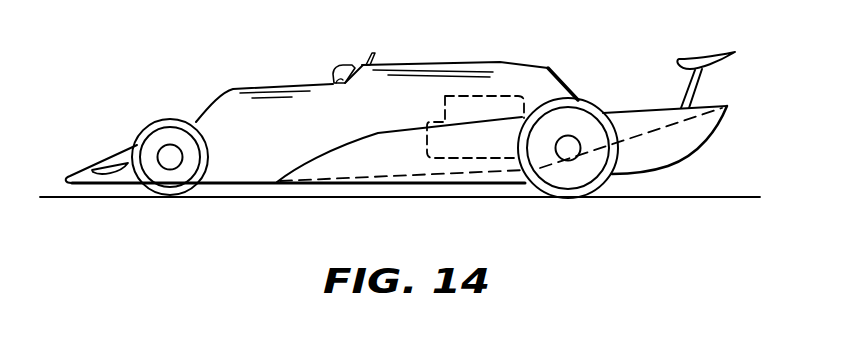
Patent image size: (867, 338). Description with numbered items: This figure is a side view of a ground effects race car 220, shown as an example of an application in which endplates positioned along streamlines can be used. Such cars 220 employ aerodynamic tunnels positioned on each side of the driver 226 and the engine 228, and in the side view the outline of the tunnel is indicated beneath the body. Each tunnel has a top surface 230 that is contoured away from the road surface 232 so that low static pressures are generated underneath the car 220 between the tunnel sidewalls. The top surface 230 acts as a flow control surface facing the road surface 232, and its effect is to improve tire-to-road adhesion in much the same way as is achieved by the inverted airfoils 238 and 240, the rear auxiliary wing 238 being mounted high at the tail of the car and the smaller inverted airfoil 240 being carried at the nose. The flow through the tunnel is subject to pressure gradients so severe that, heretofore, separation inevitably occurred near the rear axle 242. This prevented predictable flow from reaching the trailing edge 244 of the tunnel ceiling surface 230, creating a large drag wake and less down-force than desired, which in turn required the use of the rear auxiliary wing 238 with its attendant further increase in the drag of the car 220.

The ground effects race car 220 is at (413, 73).
The driver 226 is at (335, 65).
The engine 228 is at (497, 96).
The top surface 230 is at (460, 173).
The road surface 232 is at (695, 197).
The inverted airfoil 238 is at (680, 60).
The inverted airfoil 240 is at (105, 172).
The rear axle 242 is at (570, 151).
The trailing edge 244 is at (723, 110).